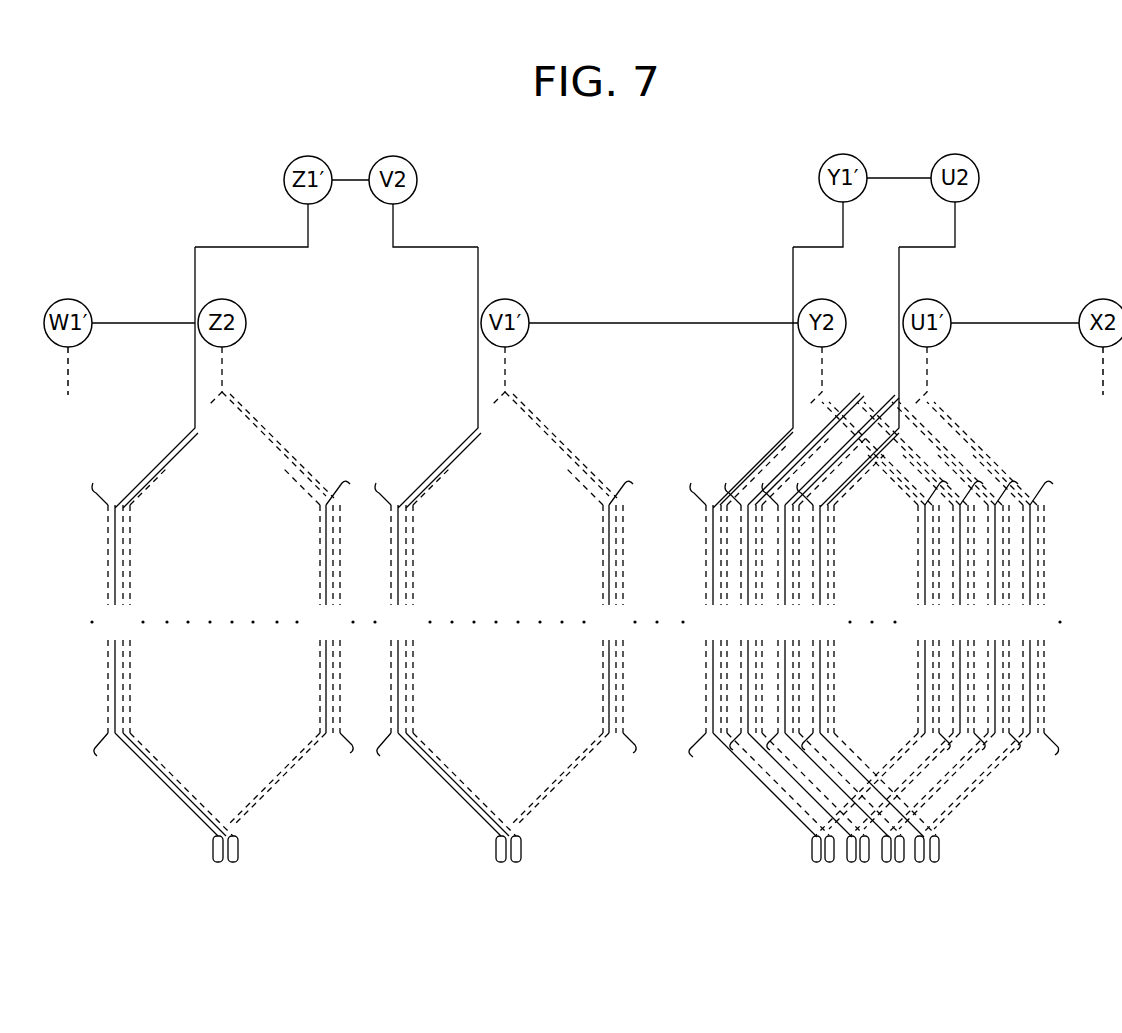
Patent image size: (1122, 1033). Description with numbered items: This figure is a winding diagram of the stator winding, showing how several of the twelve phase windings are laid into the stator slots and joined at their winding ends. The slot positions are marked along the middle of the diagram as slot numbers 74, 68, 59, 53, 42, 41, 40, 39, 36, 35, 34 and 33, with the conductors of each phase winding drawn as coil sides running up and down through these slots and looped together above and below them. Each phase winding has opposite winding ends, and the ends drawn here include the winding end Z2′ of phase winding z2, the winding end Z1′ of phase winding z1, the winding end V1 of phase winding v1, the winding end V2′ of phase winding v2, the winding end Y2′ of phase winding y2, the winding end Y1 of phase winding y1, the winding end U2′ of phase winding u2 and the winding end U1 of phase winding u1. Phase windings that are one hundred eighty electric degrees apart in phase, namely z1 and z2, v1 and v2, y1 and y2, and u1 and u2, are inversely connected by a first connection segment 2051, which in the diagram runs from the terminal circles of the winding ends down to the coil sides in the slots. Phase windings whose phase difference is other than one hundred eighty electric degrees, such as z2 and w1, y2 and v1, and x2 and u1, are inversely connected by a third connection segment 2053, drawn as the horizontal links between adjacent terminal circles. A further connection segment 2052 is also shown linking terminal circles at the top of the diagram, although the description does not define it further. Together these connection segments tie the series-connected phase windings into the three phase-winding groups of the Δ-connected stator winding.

The first connection segment 2051 is at (210, 410).
The connecting wire between terminals 2052 is at (350, 182).
The third connection segment 2053 is at (132, 323).
The slot 74 is at (165, 554).
The slot 68 is at (287, 609).
The slot 59 is at (448, 554).
The slot 53 is at (570, 609).
The slot 42 is at (759, 554).
The slot 41 is at (794, 627).
The slot 40 is at (831, 628).
The slot 39 is at (866, 554).
The slot 36 is at (883, 632).
The slot 35 is at (918, 632).
The slot 34 is at (953, 632).
The slot 33 is at (990, 632).
The winding end Z2′ is at (163, 452).
The winding end Z1′ is at (293, 497).
The winding end V1 is at (446, 452).
The winding end V2′ is at (574, 497).
The winding end Y2′ is at (756, 464).
The winding end Y1 is at (838, 392).
The winding end U2′ is at (965, 410).
The winding end U1 is at (865, 470).